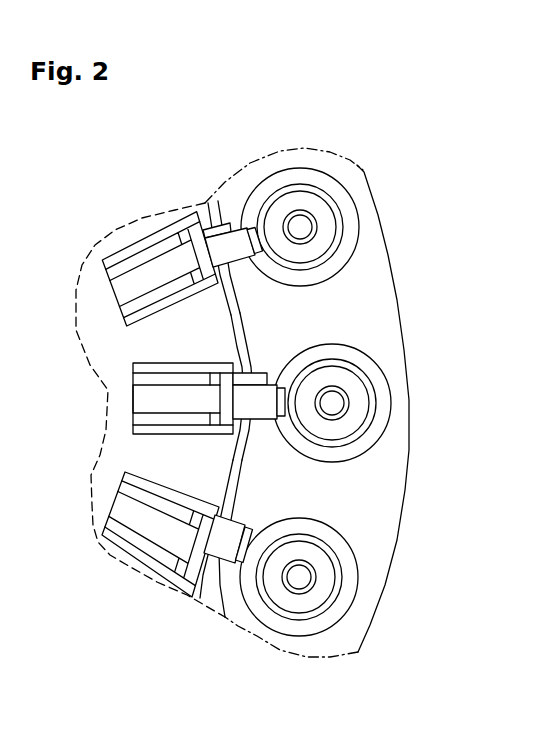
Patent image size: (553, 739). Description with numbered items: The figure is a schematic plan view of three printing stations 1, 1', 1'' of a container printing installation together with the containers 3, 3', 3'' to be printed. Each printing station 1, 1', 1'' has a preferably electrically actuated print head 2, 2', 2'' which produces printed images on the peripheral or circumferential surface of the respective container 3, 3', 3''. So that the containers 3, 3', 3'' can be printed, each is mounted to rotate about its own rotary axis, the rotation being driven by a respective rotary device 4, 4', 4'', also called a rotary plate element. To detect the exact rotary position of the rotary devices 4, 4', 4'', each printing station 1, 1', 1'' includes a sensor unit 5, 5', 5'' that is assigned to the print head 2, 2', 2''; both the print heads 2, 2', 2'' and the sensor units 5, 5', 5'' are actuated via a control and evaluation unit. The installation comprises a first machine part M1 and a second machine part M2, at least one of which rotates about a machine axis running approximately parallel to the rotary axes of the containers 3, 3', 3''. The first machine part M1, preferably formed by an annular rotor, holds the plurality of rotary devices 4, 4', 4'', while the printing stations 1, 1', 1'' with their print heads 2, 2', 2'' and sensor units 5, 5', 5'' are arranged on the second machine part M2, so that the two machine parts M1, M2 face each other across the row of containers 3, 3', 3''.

The printing station 1 is at (127, 511).
The printing station 1' is at (141, 398).
The printing station 1'' is at (133, 263).
The print head 2 is at (225, 617).
The print head 2' is at (259, 420).
The print head 2'' is at (239, 265).
The container 3 is at (333, 590).
The container 3' is at (381, 408).
The container 3'' is at (350, 227).
The rotary device 4 is at (358, 553).
The rotary device 4' is at (373, 392).
The rotary device 4'' is at (343, 211).
The sensor unit 5 is at (238, 526).
The sensor unit 5' is at (268, 386).
The sensor unit 5'' is at (220, 217).
The first machine part M1 is at (375, 310).
The second machine part M2 is at (115, 460).